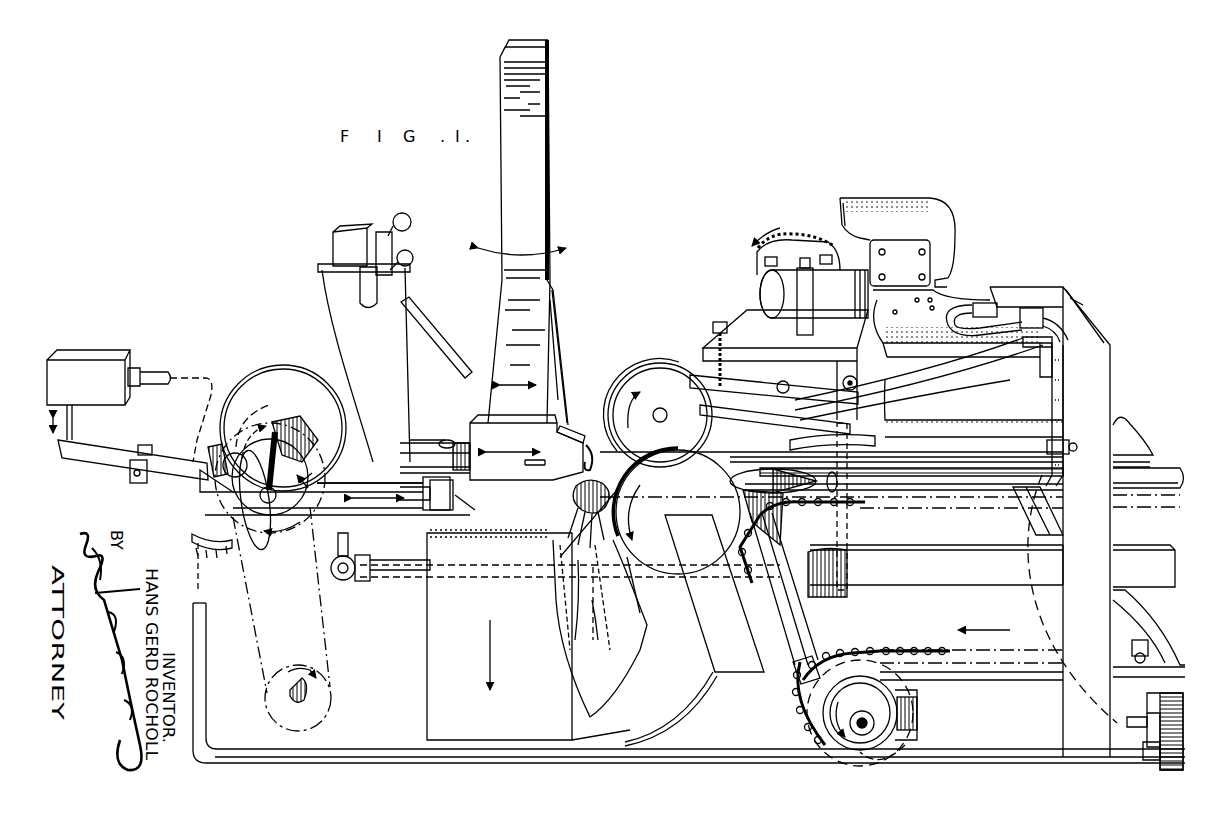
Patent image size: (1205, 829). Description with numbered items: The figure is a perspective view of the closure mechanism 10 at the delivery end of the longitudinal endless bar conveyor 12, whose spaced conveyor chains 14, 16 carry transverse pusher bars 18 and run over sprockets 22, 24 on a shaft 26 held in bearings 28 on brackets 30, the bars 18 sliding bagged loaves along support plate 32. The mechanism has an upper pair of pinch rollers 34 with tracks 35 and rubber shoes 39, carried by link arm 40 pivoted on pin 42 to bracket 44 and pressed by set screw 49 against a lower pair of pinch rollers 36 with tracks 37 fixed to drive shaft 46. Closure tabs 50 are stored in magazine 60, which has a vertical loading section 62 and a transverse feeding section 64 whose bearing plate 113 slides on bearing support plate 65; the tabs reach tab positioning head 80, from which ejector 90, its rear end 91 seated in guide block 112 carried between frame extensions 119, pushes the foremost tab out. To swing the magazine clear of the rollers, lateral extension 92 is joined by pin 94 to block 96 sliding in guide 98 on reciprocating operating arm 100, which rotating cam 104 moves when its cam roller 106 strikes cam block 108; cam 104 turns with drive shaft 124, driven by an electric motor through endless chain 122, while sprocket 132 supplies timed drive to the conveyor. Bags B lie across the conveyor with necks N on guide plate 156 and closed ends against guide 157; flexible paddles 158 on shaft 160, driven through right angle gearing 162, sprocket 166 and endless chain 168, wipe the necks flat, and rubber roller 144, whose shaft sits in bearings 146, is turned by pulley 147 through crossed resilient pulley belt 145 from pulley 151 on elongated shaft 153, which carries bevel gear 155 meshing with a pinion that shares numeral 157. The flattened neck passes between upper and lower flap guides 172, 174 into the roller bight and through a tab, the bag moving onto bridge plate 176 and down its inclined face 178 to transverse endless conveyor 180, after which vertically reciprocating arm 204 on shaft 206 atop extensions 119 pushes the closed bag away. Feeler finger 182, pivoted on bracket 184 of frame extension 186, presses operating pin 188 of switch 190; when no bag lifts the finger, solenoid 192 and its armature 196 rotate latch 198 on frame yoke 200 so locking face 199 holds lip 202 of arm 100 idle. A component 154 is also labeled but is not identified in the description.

The closure mechanism 10 is at (1068, 275).
The longitudinal endless bar conveyor 12 is at (782, 690).
The conveyor chain 14 is at (852, 505).
The conveyor chain 16 is at (918, 648).
The pusher bars 18 is at (795, 666).
The sprocket 22 is at (785, 506).
The sprocket 24 is at (907, 735).
The shaft 26 is at (862, 712).
The bearings 28 is at (891, 707).
The brackets 30 is at (972, 719).
The support plate 32 is at (1140, 625).
The upper pair of pinch rollers 34 is at (673, 395).
The contacting tracks 35 is at (656, 366).
The lower pair of pinch rollers 36 is at (689, 480).
The contacting tracks 37 is at (660, 462).
The peripheral rim or shoe 39 is at (635, 378).
The link arm 40 is at (708, 383).
The pin 42 is at (790, 386).
The bracket 44 is at (795, 350).
The drive shaft 46 is at (646, 510).
The set screw 49 is at (717, 329).
The closure tab 50 is at (598, 470).
The magazine 60 is at (493, 66).
The loading section 62 is at (553, 145).
The feeding section 64 is at (556, 343).
The bearing support plate 65 is at (556, 398).
The tab positioning head 80 is at (500, 475).
The ejector 90 is at (460, 445).
The end of ejector 91 is at (443, 440).
The lateral extension 92 is at (460, 480).
The pin 94 is at (370, 484).
The block 96 is at (440, 508).
The guide 98 is at (462, 515).
The operating arm 100 is at (395, 510).
The rotating cam 104 is at (290, 378).
The cam roller 106 is at (232, 430).
The cam block 108 is at (238, 406).
The guide block 112 is at (416, 432).
The bearing plate 113 is at (603, 440).
The extensions 119 is at (340, 262).
The endless chain 122 is at (332, 645).
The drive shaft 124 is at (256, 535).
The sprocket 132 is at (208, 560).
The roller 144 is at (1048, 438).
The resilient pulley belt 145 is at (835, 544).
The bearings 146 is at (305, 481).
The pulley 147 is at (837, 434).
The pulley 151 is at (848, 578).
The elongated shaft 153 is at (420, 580).
The gear segment 154 is at (297, 422).
The bevel gear 155 is at (345, 590).
The guide plate 156 is at (1118, 433).
The guide 157 is at (1000, 576).
The paddles 158 is at (950, 234).
The shaft 160 is at (935, 282).
The right angle gearing 162 is at (814, 228).
The sprocket 166 is at (796, 238).
The endless chain 168 is at (755, 262).
The upper flap guide 172 is at (763, 428).
The lower flap guide 174 is at (672, 515).
The bridge plate 176 is at (730, 704).
The inclined face 178 is at (632, 733).
The transverse endless conveyor 180 is at (537, 622).
The feeler finger 182 is at (790, 446).
The bracket 184 is at (1045, 380).
The extension 186 is at (1083, 330).
The operating pin 188 is at (996, 380).
The switch 190 is at (992, 348).
The solenoid 192 is at (98, 391).
The armature 196 is at (73, 422).
The latch 198 is at (115, 450).
The locking face 199 is at (206, 500).
The frame yoke 200 is at (150, 443).
The lip 202 is at (150, 460).
The vertically reciprocating arm 204 is at (430, 335).
The shaft 206 is at (364, 306).
The flexible plastic bag B is at (635, 612).
The neck N is at (578, 530).